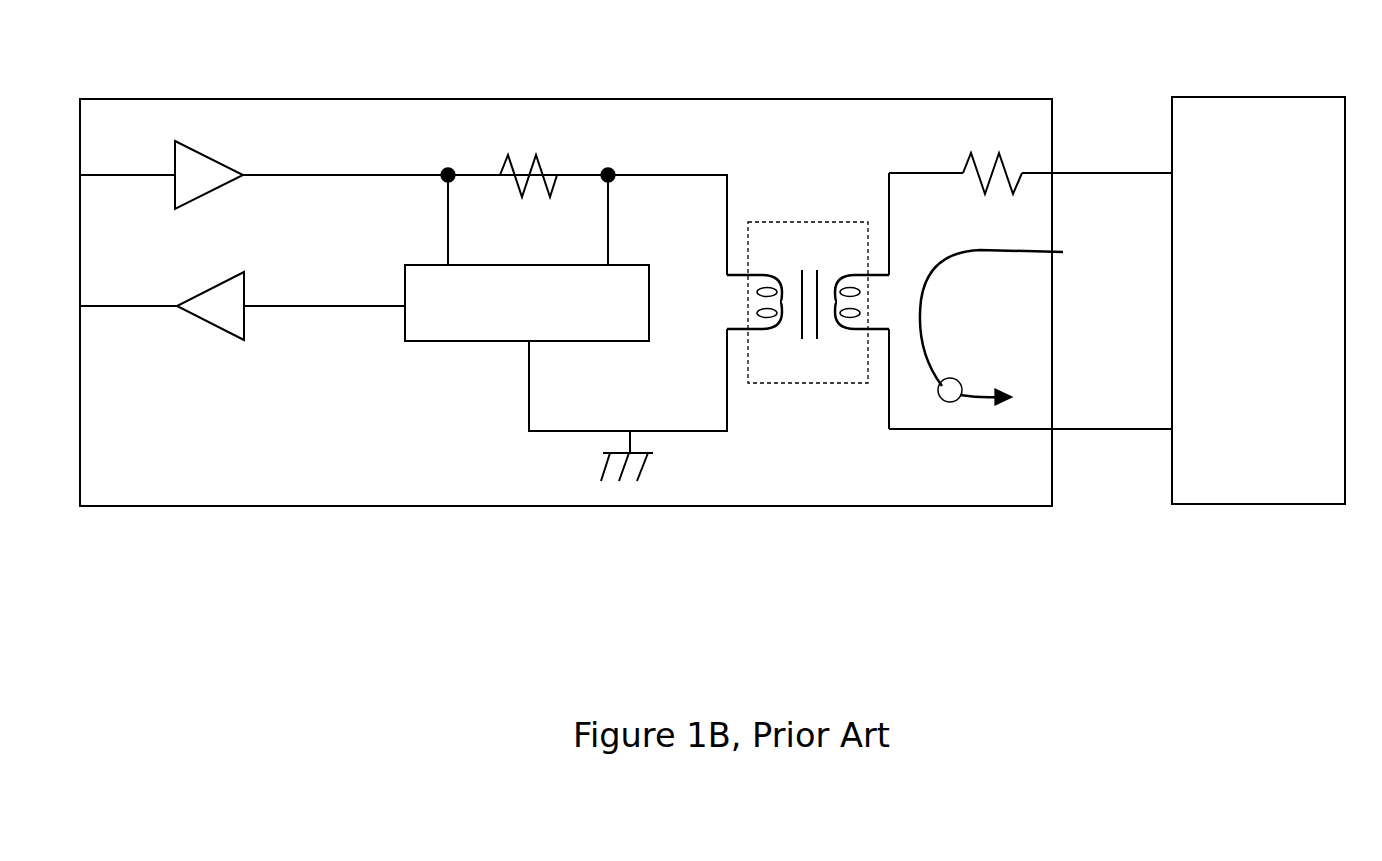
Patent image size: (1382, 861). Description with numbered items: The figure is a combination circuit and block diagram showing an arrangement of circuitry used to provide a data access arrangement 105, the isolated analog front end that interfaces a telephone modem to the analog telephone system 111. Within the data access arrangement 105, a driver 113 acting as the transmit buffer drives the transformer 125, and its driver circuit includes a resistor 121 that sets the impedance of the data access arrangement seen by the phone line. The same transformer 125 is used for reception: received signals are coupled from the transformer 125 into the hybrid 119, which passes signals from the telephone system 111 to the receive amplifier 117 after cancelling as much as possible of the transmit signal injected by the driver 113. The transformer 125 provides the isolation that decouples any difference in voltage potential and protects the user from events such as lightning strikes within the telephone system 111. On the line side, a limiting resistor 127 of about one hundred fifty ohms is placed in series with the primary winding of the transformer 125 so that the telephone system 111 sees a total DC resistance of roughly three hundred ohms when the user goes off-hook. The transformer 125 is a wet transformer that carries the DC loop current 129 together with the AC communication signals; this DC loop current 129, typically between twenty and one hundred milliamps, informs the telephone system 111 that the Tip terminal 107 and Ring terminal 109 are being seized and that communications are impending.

The data access arrangement 105 is at (377, 97).
The Tip terminal 107 is at (1089, 163).
The Ring terminal 109 is at (1127, 437).
The telephone system 111 is at (1280, 92).
The driver 113 is at (232, 155).
The receive amplifier 117 is at (257, 272).
The hybrid 119 is at (527, 303).
The resistor 121 is at (540, 150).
The transformer 125 is at (808, 302).
The limiting resistor 127 is at (1007, 148).
The DC loop current 129 is at (963, 383).